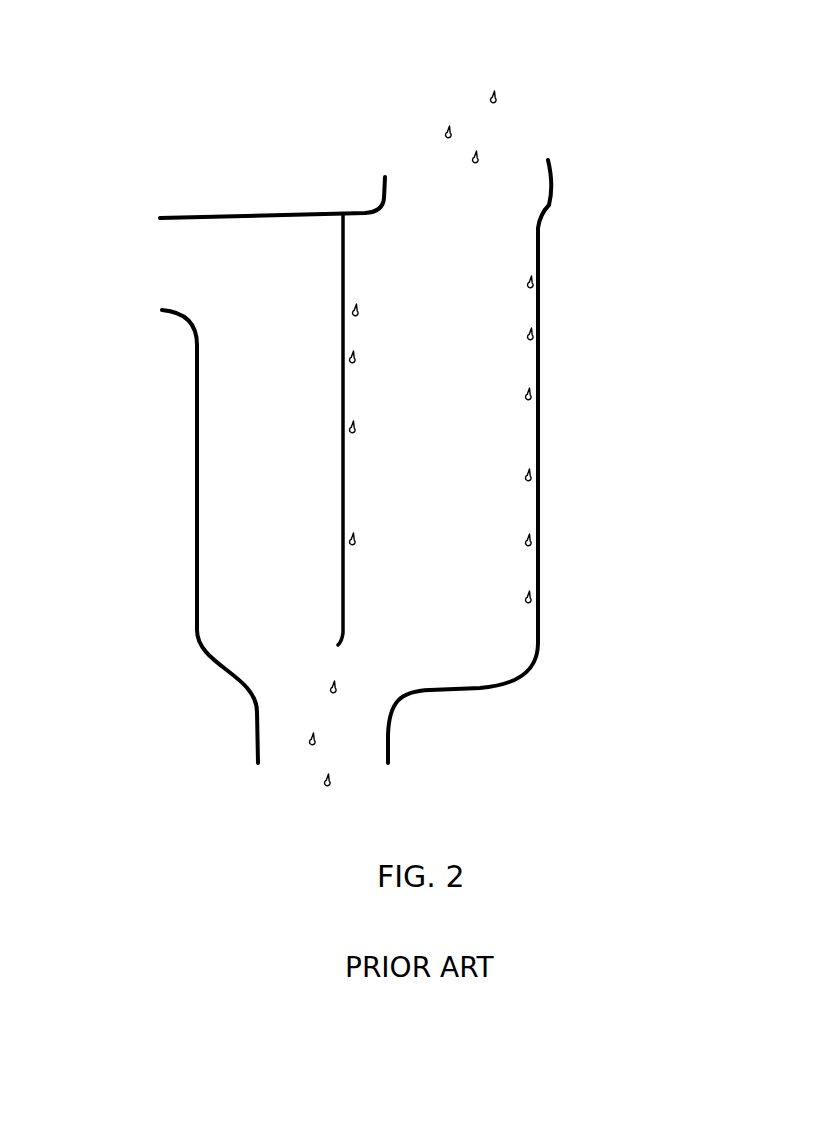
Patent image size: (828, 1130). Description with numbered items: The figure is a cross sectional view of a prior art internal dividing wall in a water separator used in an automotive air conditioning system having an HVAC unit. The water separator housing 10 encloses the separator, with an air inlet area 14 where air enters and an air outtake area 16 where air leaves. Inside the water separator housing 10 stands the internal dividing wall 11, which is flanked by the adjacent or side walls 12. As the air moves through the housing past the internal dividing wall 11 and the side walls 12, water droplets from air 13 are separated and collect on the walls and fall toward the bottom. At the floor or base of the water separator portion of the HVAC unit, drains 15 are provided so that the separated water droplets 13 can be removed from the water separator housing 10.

The water separator housing 10 is at (192, 487).
The internal dividing wall 11 is at (345, 285).
The side walls 12 is at (540, 363).
The water droplets 13 is at (355, 548).
The air inlet area 14 is at (417, 165).
The drains 15 is at (292, 760).
The air outtake area 16 is at (205, 278).